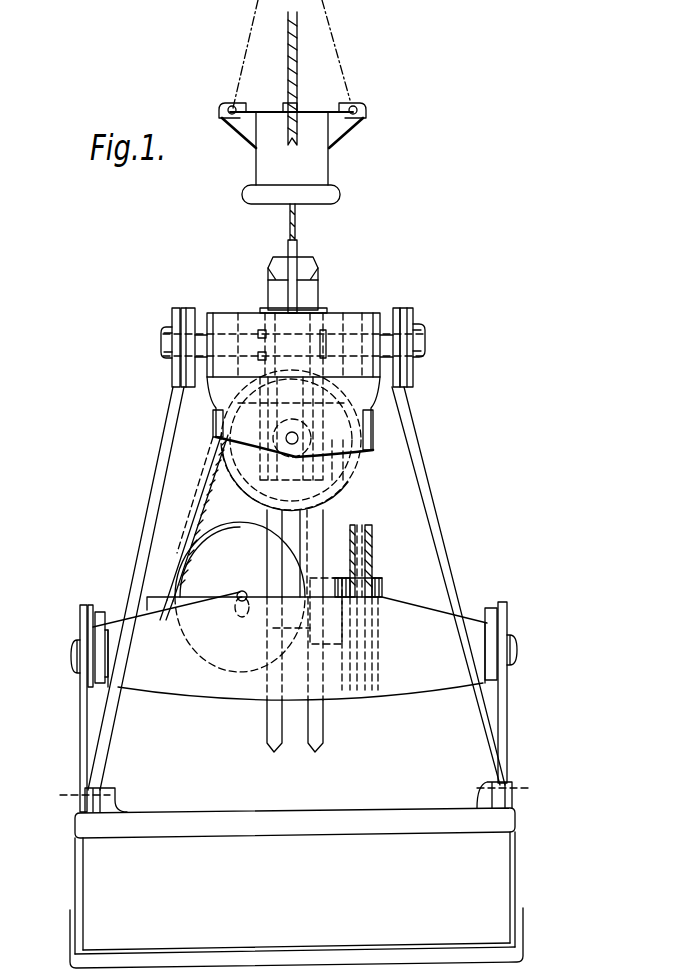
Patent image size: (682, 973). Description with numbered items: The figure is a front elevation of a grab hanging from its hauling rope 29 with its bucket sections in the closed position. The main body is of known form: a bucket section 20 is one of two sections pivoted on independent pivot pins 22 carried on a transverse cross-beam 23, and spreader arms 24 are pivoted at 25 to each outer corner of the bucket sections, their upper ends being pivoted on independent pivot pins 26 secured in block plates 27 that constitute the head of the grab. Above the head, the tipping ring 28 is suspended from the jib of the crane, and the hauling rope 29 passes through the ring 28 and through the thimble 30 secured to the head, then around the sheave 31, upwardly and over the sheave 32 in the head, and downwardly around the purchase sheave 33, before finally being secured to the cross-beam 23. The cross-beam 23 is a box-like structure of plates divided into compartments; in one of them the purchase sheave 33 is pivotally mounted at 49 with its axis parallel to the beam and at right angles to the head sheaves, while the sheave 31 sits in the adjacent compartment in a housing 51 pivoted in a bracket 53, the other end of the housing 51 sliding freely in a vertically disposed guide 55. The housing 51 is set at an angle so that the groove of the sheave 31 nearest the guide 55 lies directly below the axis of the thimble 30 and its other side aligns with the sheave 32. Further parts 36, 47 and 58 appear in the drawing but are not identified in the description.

The bucket section 20 is at (498, 888).
The pivot pins 22 is at (77, 646).
The transverse cross-beam 23 is at (440, 673).
The spreader arms 24 is at (158, 502).
The pivot 25 is at (528, 770).
The pivot pins 26 is at (163, 347).
The block plates 27 is at (208, 313).
The tipping ring 28 is at (318, 175).
The hauling rope 29 is at (297, 80).
The thimble 30 is at (305, 322).
The sheave 31 is at (207, 567).
The sheave 32 is at (262, 478).
The purchase sheave 33 is at (372, 530).
The rod 36 is at (297, 248).
The struts 47 is at (270, 523).
The pivot 49 is at (382, 590).
The housing 51 is at (238, 593).
The bracket 53 is at (158, 607).
The guide 55 is at (337, 582).
The guide rods 58 is at (315, 540).